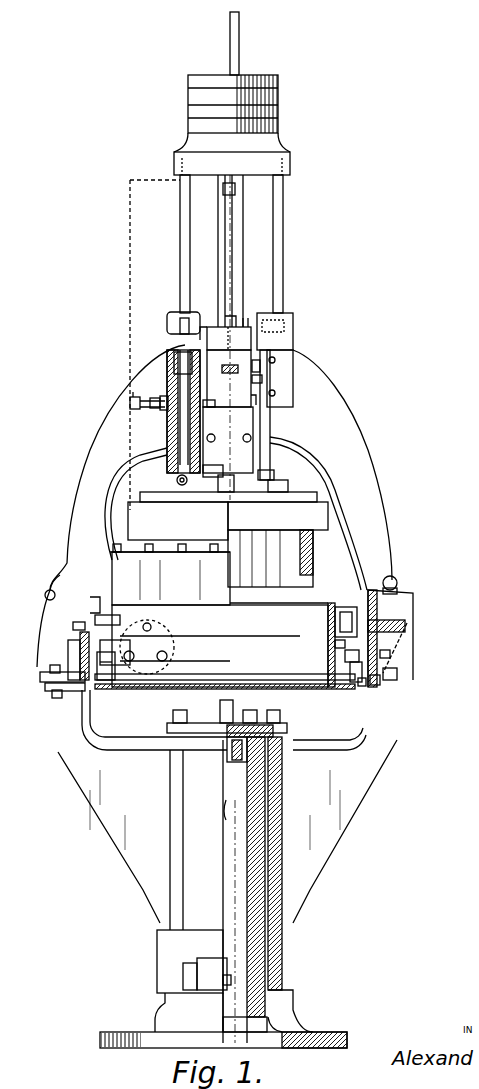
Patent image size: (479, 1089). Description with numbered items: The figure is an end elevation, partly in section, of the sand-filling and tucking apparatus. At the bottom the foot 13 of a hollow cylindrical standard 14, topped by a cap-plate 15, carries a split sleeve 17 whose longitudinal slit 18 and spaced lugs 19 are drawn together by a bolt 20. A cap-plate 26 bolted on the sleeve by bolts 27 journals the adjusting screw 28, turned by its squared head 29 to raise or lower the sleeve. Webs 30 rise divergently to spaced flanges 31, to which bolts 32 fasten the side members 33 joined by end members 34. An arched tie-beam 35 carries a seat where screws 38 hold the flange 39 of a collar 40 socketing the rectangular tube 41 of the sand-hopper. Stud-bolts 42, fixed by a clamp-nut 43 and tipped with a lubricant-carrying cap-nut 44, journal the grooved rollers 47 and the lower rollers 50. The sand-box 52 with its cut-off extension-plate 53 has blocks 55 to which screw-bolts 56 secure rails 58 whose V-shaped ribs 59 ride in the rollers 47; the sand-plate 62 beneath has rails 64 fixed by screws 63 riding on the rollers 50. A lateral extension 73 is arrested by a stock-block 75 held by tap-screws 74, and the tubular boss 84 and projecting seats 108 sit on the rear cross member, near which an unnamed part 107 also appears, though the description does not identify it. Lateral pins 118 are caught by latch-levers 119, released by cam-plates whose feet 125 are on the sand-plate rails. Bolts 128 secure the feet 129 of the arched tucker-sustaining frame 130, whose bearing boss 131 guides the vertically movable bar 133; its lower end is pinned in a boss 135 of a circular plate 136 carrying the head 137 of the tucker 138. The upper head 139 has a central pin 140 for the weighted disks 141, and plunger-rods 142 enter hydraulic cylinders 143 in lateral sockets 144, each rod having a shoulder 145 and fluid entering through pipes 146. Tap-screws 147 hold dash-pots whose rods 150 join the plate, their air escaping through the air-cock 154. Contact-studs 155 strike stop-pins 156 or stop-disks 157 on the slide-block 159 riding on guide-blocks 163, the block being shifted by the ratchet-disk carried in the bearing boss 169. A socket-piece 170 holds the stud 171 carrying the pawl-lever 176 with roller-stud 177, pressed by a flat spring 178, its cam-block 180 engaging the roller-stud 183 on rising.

The foot 13 is at (128, 1032).
The hollow cylindrical standard 14 is at (247, 880).
The cap-plate 15 is at (236, 770).
The split sleeve 17 is at (290, 868).
The longitudinal slit 18 is at (223, 872).
The spaced lugs 19 is at (210, 958).
The bolt 20 is at (188, 963).
The cap-plate 26 is at (255, 710).
The bolts 27 is at (186, 704).
The adjusting screw 28 is at (227, 806).
The squared head 29 is at (233, 704).
The webs 30 is at (227, 831).
The spaced flanges 31 is at (47, 688).
The bolts 32 is at (55, 665).
The side members 33 is at (40, 676).
The end members 34 is at (163, 696).
The arched tie-beam 35 is at (95, 600).
The screws 38 is at (182, 544).
The flange 39 is at (160, 544).
The collar 40 is at (206, 540).
The standing rectangular tube 41 is at (128, 205).
The stud-bolts 42 is at (375, 685).
The clamp-nut 43 is at (397, 674).
The lubricant-carrying cap-nut 44 is at (395, 672).
The bearing and guiding roller 47 is at (340, 625).
The guiding and supporting rollers 50 is at (90, 700).
The sand-box 52 is at (220, 645).
The cut-off extension-plate 53 is at (296, 603).
The blocks 55 is at (335, 617).
The screw-bolts 56 is at (335, 644).
The rails 58 is at (358, 608).
The V-shaped ribs 59 is at (377, 622).
The sand-plate 62 is at (208, 689).
The screws 63 is at (362, 686).
The rails 64 is at (350, 670).
The lateral extension 73 is at (112, 650).
The tap-screws 74 is at (390, 654).
The stock-block 75 is at (345, 656).
The tubular boss 84 is at (105, 680).
The guide block 107 is at (275, 313).
The projecting seats 108 is at (155, 632).
The lateral pins 118 is at (80, 648).
The latch-levers 119 is at (73, 626).
The feet 125 is at (68, 655).
The bolts 128 is at (62, 578).
The feet 129 is at (50, 598).
The tucker-sustaining frame 130 is at (214, 506).
The bearing boss 131 is at (228, 411).
The vertically movable bar 133 is at (243, 280).
The boss 135 is at (218, 490).
The circular plate 136 is at (288, 488).
The head 137 is at (280, 518).
The tucker 138 is at (270, 558).
The head 139 is at (232, 163).
The central pin 140 is at (239, 45).
The weighted disks 141 is at (278, 115).
The plunger-rods 142 is at (190, 258).
The hydraulic cylinder 143 is at (174, 365).
The lateral socket 144 is at (167, 430).
The shoulder 145 is at (167, 330).
The pipes 146 is at (177, 482).
The tap-screws 147 is at (243, 438).
The rods 150 is at (203, 471).
The air-cock 154 is at (130, 400).
The contact-studs 155 is at (223, 190).
The stop-pins 156 is at (230, 316).
The stop-disks 157 is at (210, 327).
The slide-block 159 is at (240, 338).
The guide-blocks 163 is at (229, 338).
The bearing boss 169 is at (293, 346).
The socket-piece 170 is at (258, 495).
The stud 171 is at (274, 474).
The pawl-lever 176 is at (262, 380).
The roller-stud 177 is at (244, 318).
The flat spring 178 is at (270, 410).
The cam-block 180 is at (260, 366).
The roller-stud 183 is at (262, 402).